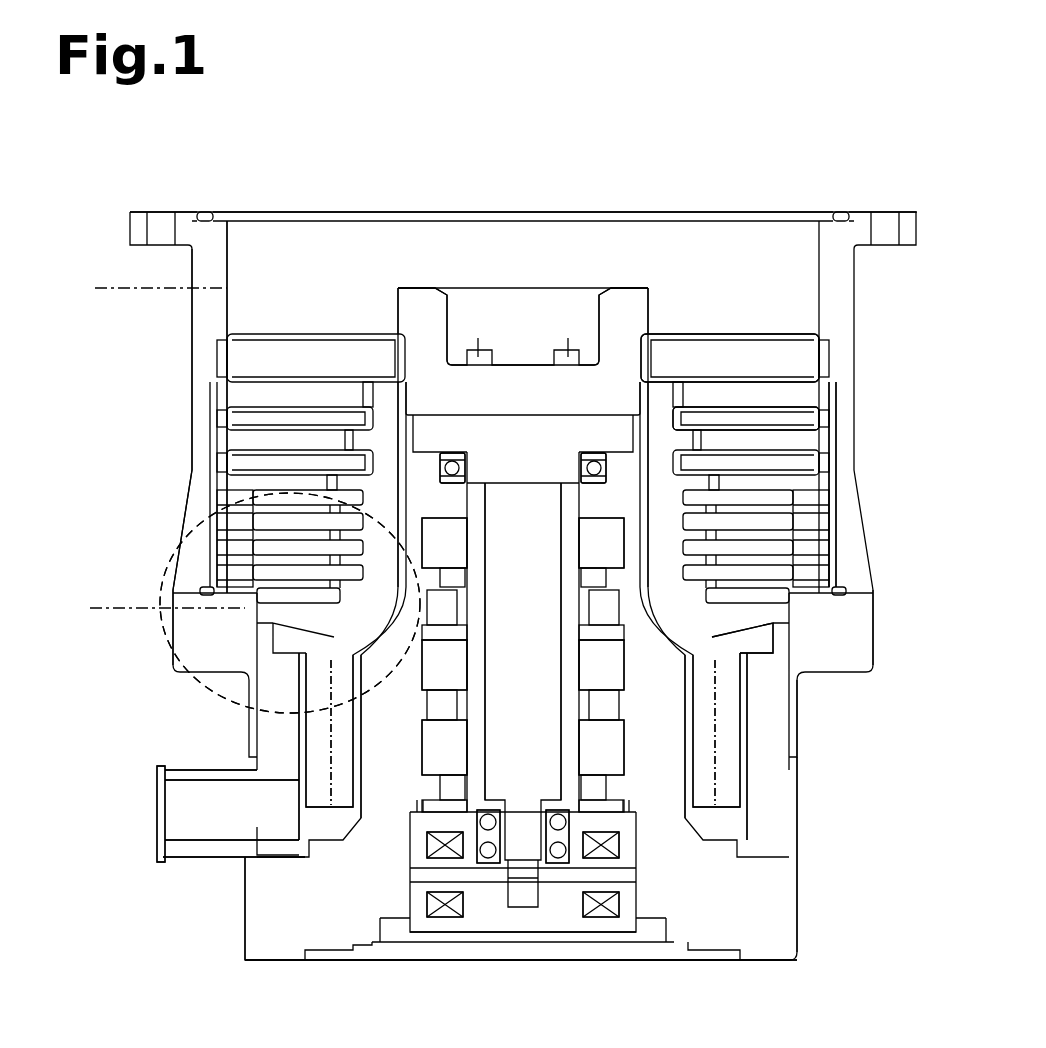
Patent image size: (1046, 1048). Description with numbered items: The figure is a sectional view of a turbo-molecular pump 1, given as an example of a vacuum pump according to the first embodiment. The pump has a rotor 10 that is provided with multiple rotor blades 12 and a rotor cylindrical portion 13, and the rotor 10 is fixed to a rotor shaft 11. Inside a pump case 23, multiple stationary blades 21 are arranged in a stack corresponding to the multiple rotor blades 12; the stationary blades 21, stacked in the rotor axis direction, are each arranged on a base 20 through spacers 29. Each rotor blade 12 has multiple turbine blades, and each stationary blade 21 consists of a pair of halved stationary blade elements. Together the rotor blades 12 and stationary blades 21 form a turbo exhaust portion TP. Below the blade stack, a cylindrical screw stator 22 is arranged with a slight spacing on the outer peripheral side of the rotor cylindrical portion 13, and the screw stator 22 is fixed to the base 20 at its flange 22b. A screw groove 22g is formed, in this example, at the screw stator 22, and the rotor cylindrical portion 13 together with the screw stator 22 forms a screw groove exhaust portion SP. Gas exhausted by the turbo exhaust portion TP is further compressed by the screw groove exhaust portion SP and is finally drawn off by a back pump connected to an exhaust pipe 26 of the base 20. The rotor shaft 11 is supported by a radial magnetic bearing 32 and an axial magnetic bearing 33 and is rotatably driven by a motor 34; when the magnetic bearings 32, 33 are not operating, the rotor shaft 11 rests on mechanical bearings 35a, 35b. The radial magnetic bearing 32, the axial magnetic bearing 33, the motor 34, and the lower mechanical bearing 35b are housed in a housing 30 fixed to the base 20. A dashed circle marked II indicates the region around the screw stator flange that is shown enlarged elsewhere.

The turbo-molecular pump 1 is at (553, 177).
The rotor 10 is at (614, 308).
The rotor shaft 11 is at (533, 768).
The rotor blades 12 is at (768, 305).
The rotor cylindrical portion 13 is at (343, 733).
The base 20 is at (778, 768).
The stationary blades 21 is at (778, 363).
The screw stator 22 is at (323, 693).
The flange 22b is at (767, 637).
The screw groove 22g is at (307, 660).
The pump case 23 is at (195, 394).
The exhaust pipe 26 is at (172, 845).
The spacers 29 is at (823, 398).
The housing 30 is at (280, 893).
The radial magnetic bearing 32 is at (440, 540).
The axial magnetic bearing 33 is at (598, 903).
The motor 34 is at (605, 650).
The mechanical bearing 35a is at (607, 466).
The mechanical bearing 35b is at (487, 857).
The turbo exhaust portion TP is at (100, 289).
The screw groove exhaust portion SP is at (88, 685).
The section II is at (199, 561).